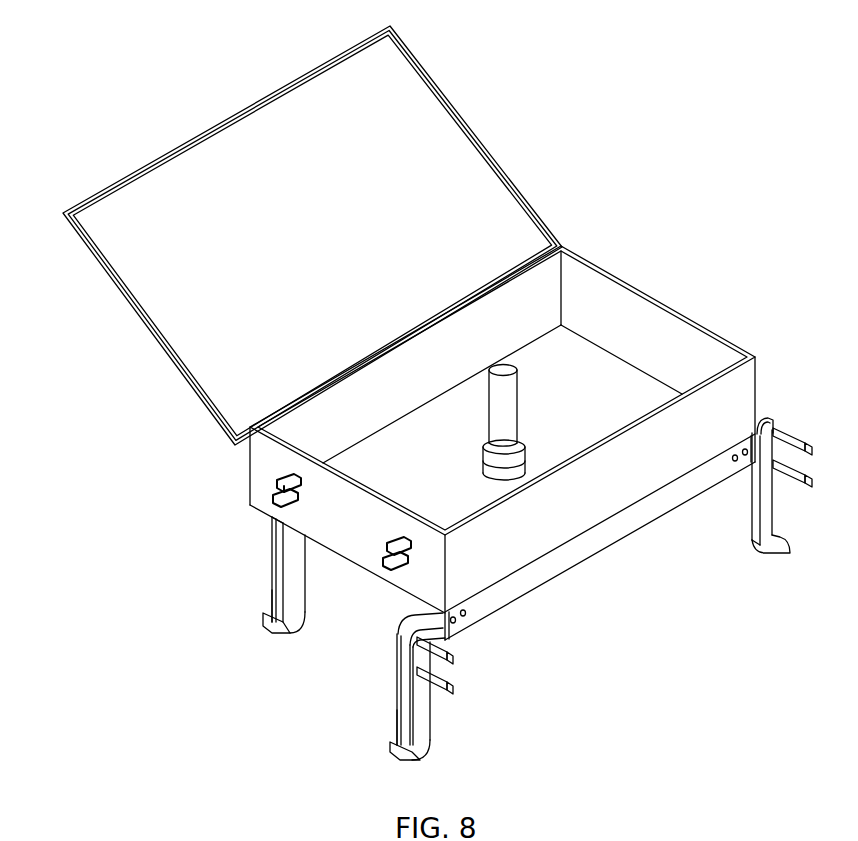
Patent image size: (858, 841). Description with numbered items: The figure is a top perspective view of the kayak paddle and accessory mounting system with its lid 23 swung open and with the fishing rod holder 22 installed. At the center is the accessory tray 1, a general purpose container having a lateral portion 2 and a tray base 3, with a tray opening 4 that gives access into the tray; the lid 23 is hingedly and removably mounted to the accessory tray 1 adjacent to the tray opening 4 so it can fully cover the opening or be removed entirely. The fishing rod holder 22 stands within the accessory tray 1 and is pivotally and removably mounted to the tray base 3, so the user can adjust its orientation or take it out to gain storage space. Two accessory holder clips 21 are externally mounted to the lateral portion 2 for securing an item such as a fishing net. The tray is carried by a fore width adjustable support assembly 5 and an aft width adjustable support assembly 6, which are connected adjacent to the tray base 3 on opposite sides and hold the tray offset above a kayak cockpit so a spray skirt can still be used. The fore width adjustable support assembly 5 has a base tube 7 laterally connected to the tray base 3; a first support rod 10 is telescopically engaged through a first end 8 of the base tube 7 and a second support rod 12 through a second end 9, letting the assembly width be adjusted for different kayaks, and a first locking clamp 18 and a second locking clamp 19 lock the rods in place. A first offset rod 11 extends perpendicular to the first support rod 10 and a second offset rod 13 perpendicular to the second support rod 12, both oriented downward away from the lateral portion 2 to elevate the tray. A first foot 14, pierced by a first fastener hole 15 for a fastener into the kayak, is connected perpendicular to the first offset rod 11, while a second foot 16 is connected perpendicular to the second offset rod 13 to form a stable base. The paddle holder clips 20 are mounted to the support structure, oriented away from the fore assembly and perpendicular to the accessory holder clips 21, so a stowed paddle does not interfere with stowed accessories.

The accessory tray 1 is at (668, 300).
The lateral portion 2 is at (338, 527).
The tray base 3 is at (424, 472).
The tray opening 4 is at (420, 350).
The fore width adjustable support assembly 5 is at (314, 565).
The aft width adjustable support assembly 6 is at (442, 706).
The base tube 7 is at (605, 546).
The first end 8 is at (440, 607).
The second end 9 is at (752, 440).
The first support rod 10 is at (412, 616).
The first offset rod 11 is at (275, 563).
The second support rod 12 is at (765, 420).
The second offset rod 13 is at (778, 505).
The first foot 14 is at (296, 626).
The first fastener hole 15 is at (272, 614).
The second foot 16 is at (780, 548).
The first locking clamp 18 is at (456, 610).
The second locking clamp 19 is at (740, 462).
The paddle holder clip 20 is at (456, 686).
The accessory holder clip 21 is at (291, 480).
The fishing rod holder 22 is at (513, 410).
The lid 23 is at (226, 124).